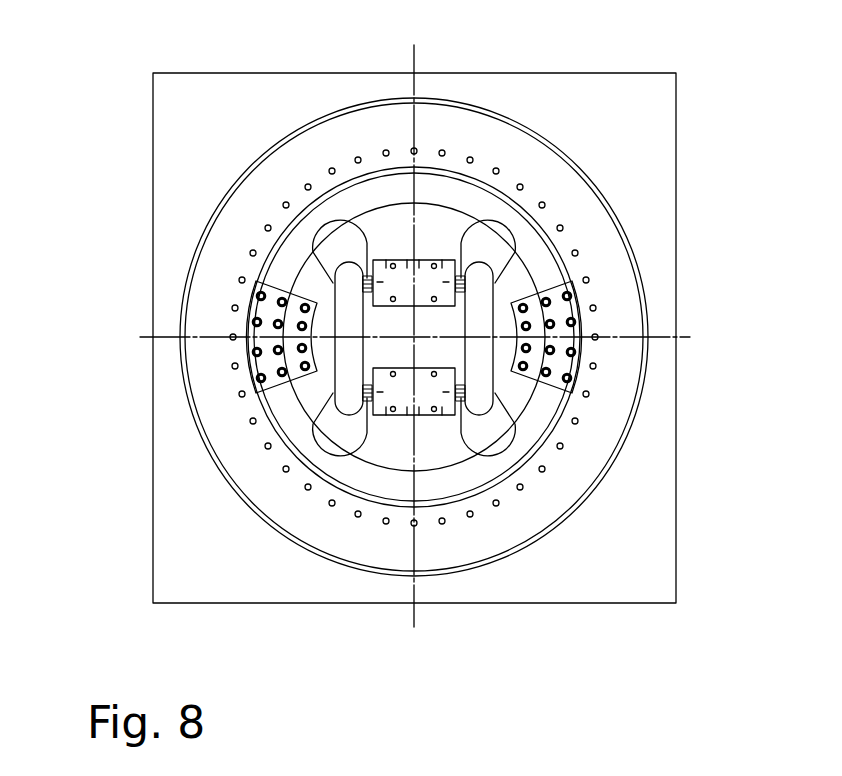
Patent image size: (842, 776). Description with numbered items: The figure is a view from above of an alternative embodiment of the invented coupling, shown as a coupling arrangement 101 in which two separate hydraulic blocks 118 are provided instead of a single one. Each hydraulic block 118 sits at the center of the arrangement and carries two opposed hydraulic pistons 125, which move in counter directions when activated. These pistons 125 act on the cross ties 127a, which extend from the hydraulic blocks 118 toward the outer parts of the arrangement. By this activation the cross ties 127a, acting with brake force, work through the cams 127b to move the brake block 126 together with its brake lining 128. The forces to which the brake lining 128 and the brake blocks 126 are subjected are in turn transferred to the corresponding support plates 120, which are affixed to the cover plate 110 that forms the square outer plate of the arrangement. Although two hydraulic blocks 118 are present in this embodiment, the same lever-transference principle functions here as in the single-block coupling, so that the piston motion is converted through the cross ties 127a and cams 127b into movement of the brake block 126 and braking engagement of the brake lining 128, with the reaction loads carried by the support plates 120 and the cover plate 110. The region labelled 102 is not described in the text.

The coupling arrangement 101 is at (146, 97).
The cover plate 110 is at (177, 147).
The hydraulic pistons 125 is at (367, 274).
The hydraulic blocks 118 is at (428, 290).
The support plates 120 is at (258, 307).
The cross ties 127a is at (483, 378).
The cams 127b is at (480, 407).
The brake block 126 is at (357, 475).
The brake lining 128 is at (350, 500).
The inner plate 102 is at (435, 450).